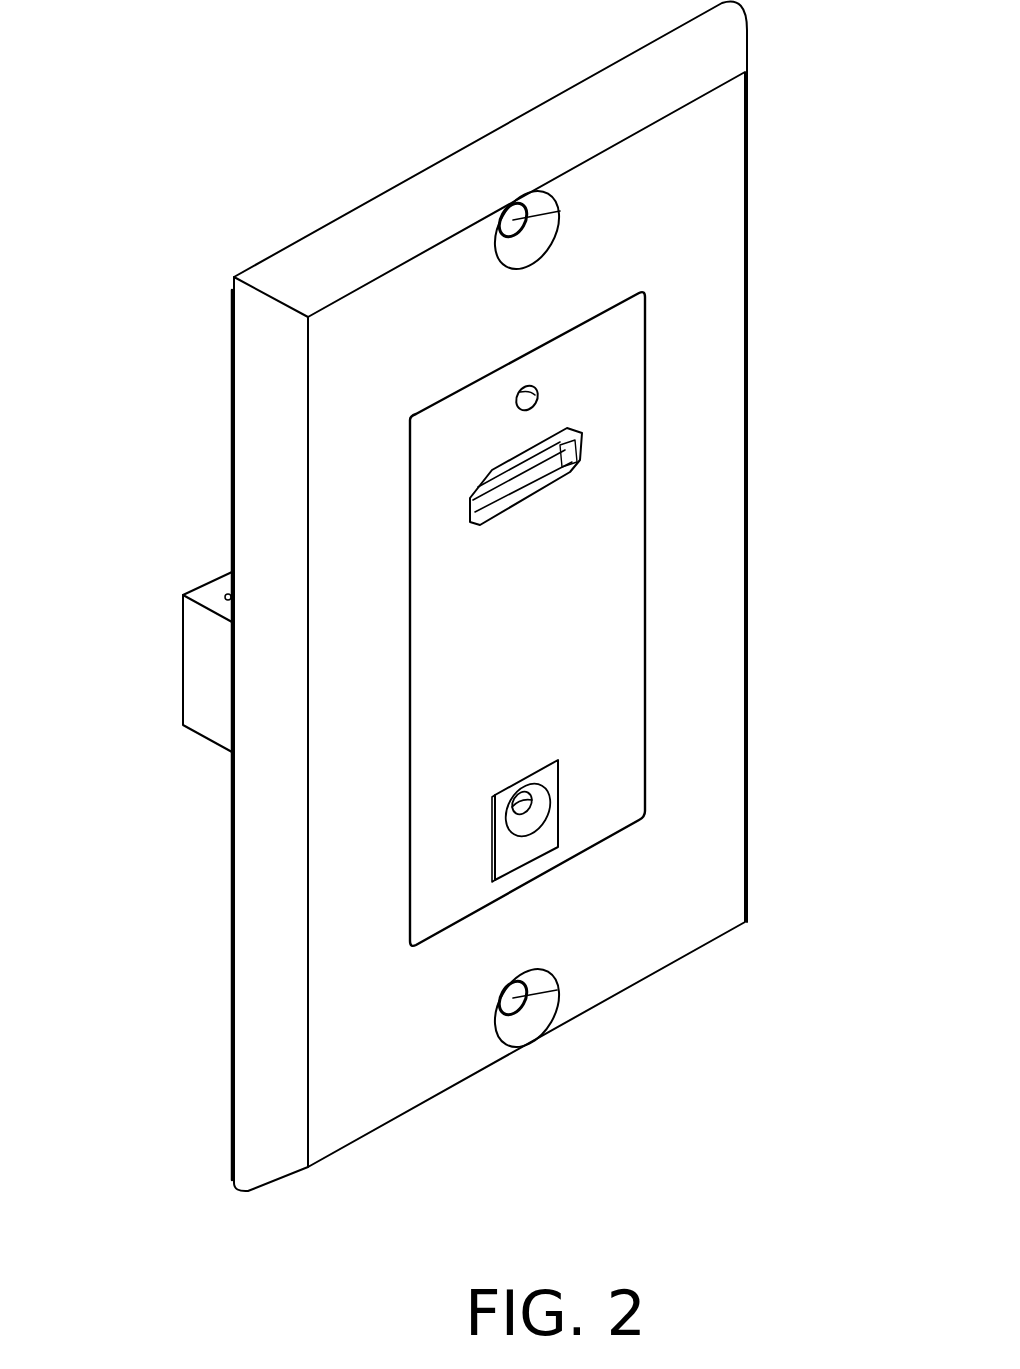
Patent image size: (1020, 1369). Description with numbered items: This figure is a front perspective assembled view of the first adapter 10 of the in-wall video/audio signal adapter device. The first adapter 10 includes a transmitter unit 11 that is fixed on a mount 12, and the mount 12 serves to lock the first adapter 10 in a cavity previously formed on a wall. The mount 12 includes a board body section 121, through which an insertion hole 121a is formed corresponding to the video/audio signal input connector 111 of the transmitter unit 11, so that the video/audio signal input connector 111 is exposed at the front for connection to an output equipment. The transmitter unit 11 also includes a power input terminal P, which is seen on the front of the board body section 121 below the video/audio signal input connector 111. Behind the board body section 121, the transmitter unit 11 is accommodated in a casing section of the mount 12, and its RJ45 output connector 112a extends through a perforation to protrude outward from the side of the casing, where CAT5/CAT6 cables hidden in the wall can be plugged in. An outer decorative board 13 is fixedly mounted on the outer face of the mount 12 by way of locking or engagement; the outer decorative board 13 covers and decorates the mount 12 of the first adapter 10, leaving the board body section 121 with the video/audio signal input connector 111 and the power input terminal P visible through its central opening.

The first adapter 10 is at (297, 237).
The transmitter unit 11 is at (565, 660).
The video/audio signal input connector 111 is at (580, 442).
The RJ45 output connector 112a is at (183, 658).
The mount 12 is at (607, 557).
The board body section 121 is at (568, 612).
The insertion hole 121a is at (578, 468).
The outer decorative board 13 is at (713, 162).
The power input terminal P is at (532, 812).